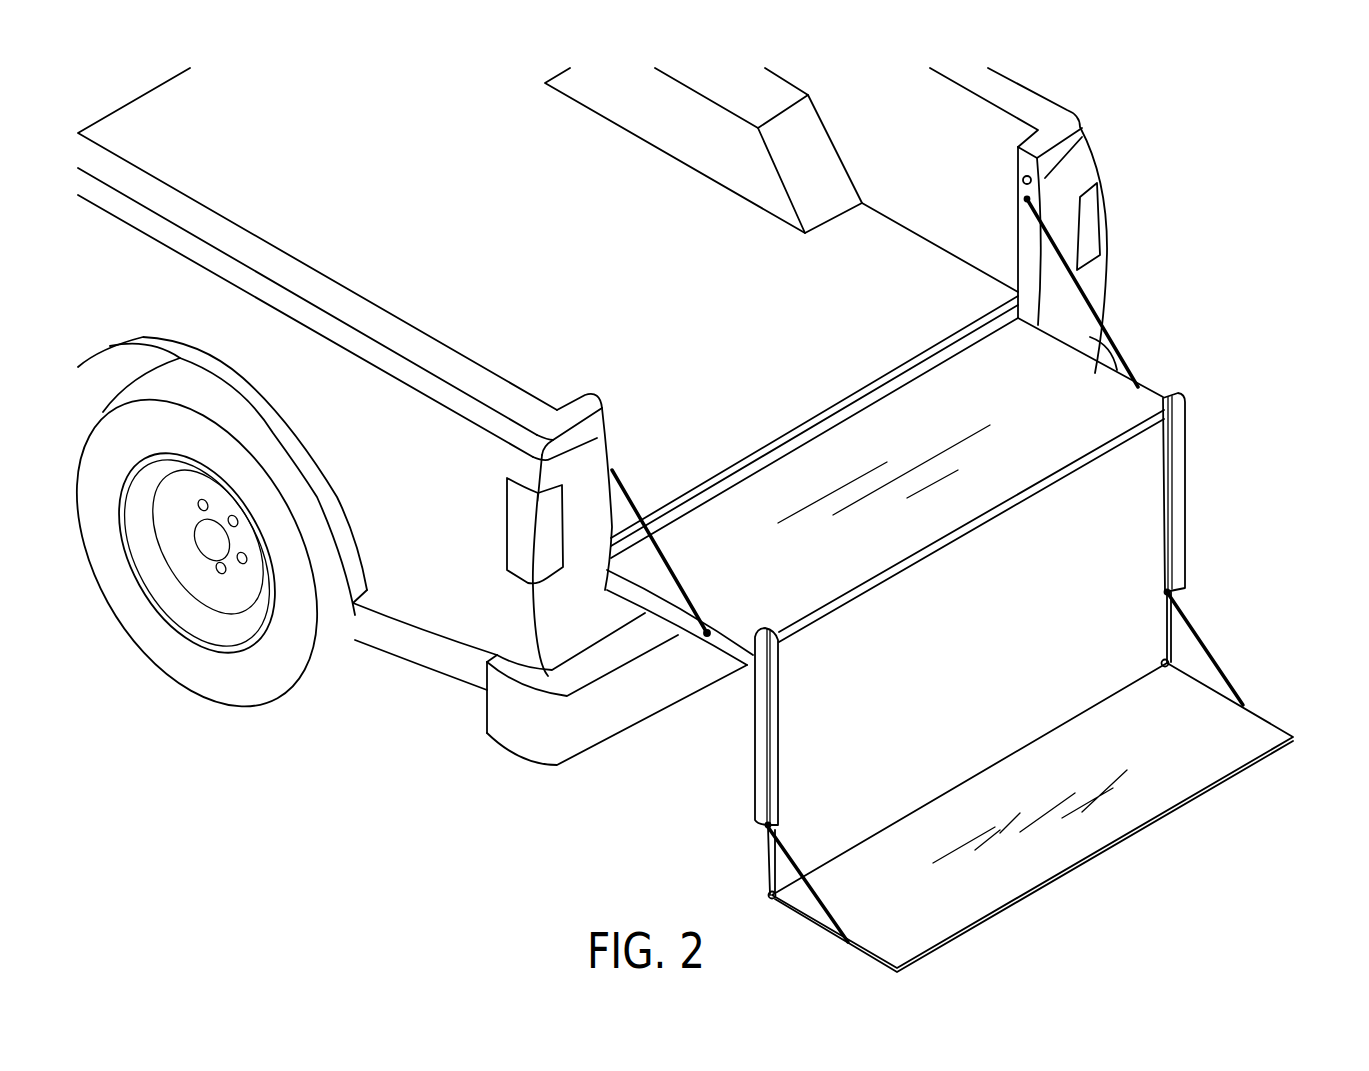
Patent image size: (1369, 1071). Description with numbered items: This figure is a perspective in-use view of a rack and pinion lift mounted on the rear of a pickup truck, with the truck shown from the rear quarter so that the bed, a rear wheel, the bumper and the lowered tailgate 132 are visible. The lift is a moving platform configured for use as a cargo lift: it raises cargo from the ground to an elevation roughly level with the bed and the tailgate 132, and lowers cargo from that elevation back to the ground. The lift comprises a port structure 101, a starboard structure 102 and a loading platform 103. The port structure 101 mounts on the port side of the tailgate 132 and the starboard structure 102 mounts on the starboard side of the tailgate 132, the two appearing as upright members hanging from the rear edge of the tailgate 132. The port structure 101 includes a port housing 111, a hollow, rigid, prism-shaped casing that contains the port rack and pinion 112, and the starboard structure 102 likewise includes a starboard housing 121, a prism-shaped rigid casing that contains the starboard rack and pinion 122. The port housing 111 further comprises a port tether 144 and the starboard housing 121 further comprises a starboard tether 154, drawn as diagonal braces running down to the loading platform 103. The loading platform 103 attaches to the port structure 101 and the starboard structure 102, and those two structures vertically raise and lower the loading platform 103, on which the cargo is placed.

The port structure 101 is at (748, 810).
The starboard structure 102 is at (1192, 523).
The loading platform 103 is at (1143, 825).
The port housing 111 is at (780, 730).
The port rack and pinion 112 is at (768, 853).
The starboard housing 121 is at (1185, 443).
The starboard rack and pinion 122 is at (1167, 625).
The tailgate 132 is at (1117, 405).
The port tether 144 is at (810, 887).
The starboard tether 154 is at (1213, 653).